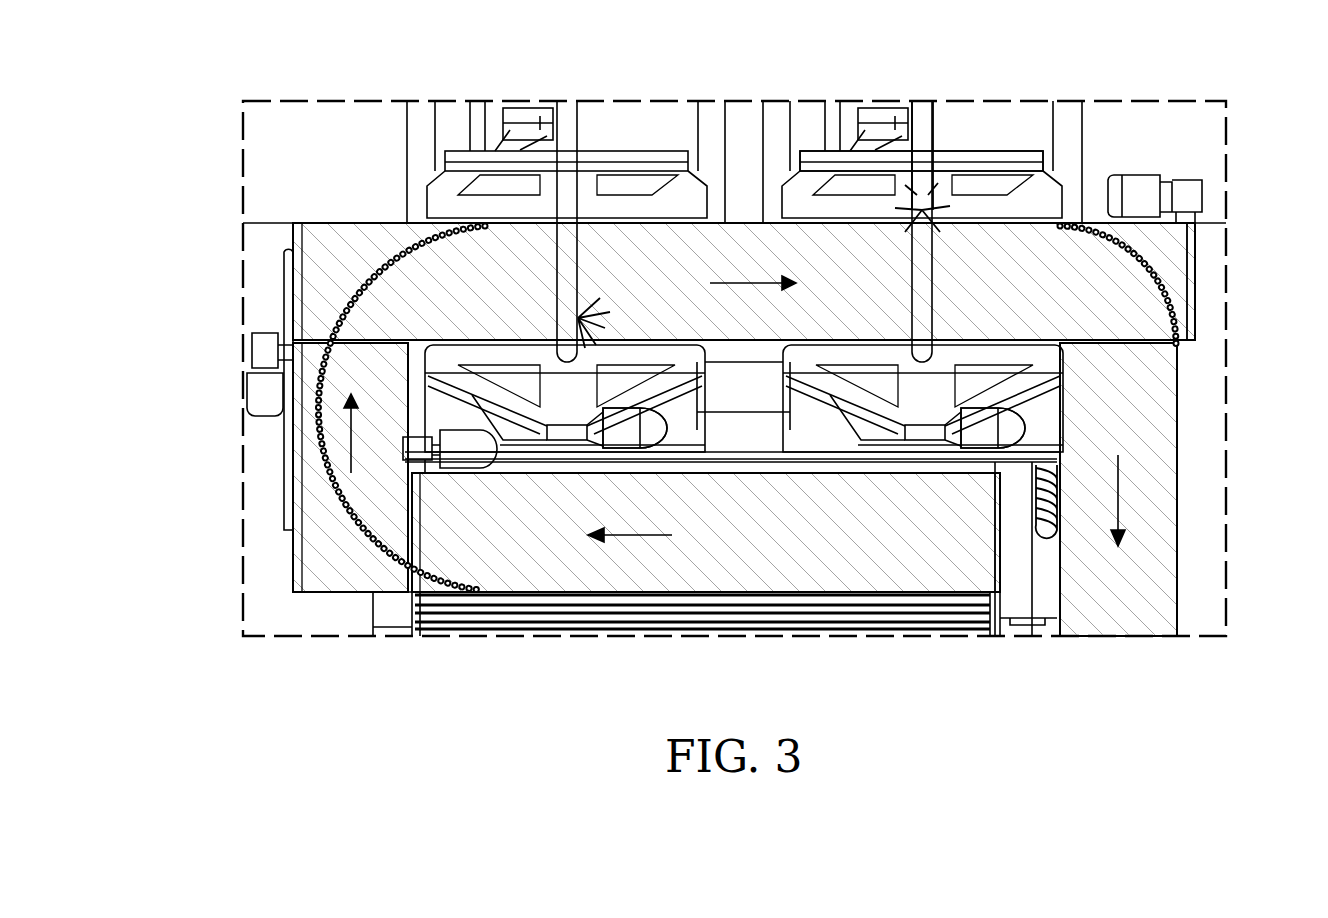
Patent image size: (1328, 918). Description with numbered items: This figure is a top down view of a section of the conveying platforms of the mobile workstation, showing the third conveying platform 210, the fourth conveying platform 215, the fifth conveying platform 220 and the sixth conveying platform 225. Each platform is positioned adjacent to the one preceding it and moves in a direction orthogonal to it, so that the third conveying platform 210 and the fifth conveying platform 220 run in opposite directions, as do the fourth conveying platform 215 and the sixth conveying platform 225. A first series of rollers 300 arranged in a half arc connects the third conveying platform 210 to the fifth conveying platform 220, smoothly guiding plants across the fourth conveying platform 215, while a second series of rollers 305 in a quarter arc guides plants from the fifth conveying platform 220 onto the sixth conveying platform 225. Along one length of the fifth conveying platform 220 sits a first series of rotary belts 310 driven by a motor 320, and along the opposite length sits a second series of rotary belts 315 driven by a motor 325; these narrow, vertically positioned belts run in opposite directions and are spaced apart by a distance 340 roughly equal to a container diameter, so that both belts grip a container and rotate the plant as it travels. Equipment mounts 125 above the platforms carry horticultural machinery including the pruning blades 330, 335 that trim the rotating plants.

The equipment mounts 125 is at (1077, 135).
The third conveying platform 210 is at (467, 538).
The fourth conveying platform 215 is at (330, 455).
The fifth conveying platform 220 is at (1093, 277).
The sixth conveying platform 225 is at (1135, 560).
The first series of rollers 300 is at (330, 503).
The second series of rollers 305 is at (1178, 322).
The first series of rotary belts 310 is at (805, 205).
The second series of rotary belts 315 is at (783, 372).
The motor 320 is at (893, 130).
The motor 325 is at (972, 440).
The pruning blade 330 is at (536, 317).
The pruning blade 335 is at (940, 192).
The distance 340 is at (218, 217).